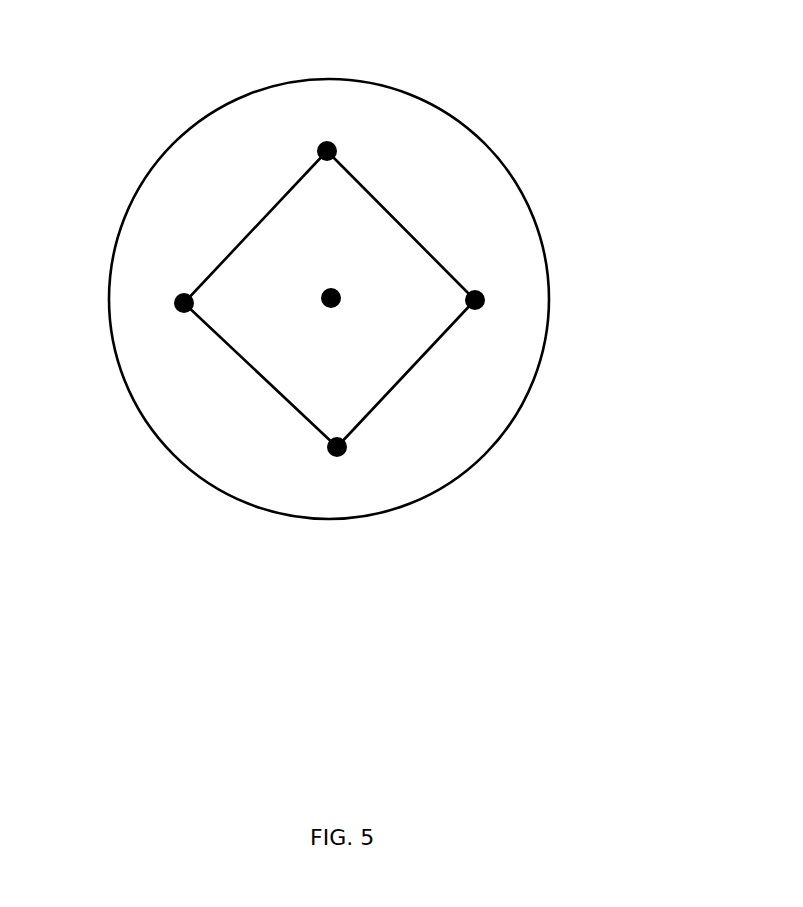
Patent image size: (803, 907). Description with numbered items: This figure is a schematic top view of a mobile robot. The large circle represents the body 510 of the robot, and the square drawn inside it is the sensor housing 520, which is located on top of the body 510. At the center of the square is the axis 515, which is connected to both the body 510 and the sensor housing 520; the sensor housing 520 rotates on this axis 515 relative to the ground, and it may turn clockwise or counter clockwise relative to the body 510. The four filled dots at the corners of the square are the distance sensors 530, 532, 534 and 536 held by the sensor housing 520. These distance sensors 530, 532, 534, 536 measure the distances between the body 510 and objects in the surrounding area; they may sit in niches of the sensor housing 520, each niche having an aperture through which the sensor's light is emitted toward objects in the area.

The body 510 is at (210, 457).
The axis 515 is at (340, 292).
The sensor housing 520 is at (257, 358).
The distance sensor 530 is at (484, 302).
The distance sensor 532 is at (338, 456).
The distance sensor 534 is at (181, 300).
The distance sensor 536 is at (329, 140).